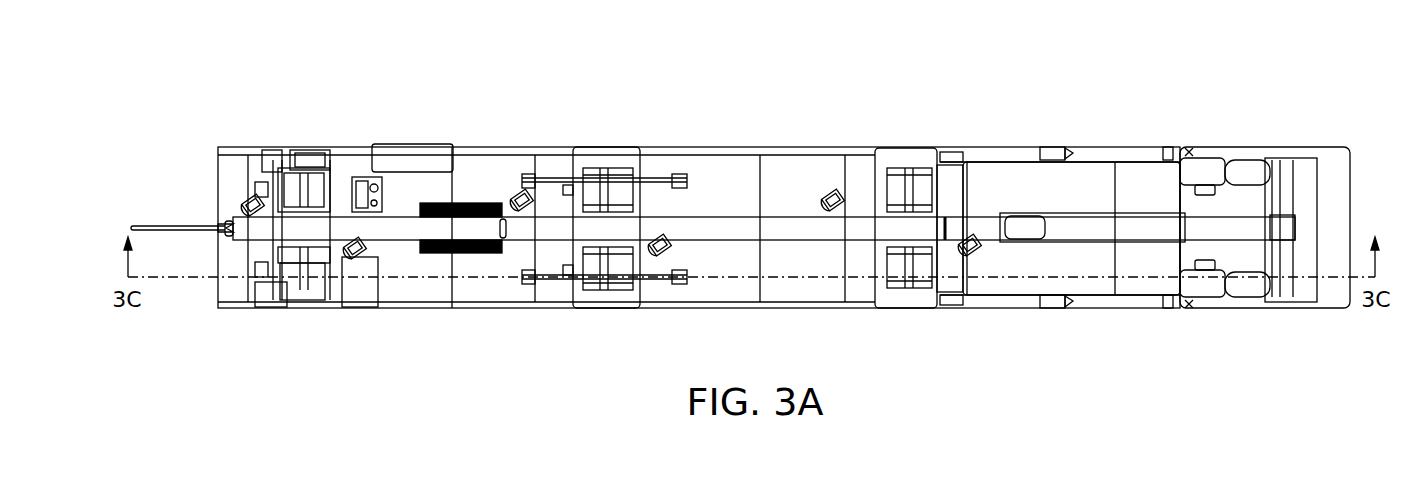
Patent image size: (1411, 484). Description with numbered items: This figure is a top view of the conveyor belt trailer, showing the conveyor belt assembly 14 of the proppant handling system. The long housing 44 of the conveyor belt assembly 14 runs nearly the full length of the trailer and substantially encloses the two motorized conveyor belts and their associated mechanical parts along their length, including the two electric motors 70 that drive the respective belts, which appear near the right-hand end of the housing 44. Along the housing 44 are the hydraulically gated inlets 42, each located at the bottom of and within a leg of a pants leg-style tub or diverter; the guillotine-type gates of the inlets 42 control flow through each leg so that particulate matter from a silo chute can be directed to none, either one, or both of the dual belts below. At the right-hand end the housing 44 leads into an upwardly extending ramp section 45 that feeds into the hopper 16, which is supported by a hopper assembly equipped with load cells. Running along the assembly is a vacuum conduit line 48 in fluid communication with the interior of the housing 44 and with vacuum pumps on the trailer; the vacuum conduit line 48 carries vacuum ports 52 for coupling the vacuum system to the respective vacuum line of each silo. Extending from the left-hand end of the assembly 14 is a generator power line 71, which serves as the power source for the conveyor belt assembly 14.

The conveyor belt assembly 14 is at (747, 92).
The hopper 16 is at (1338, 153).
The housing inlet 42 is at (283, 187).
The housing 44 is at (1007, 285).
The ramp section 45 is at (1087, 185).
The vacuum conduit line 48 is at (990, 222).
The vacuum port 52 is at (522, 198).
The electric motor 70 is at (1207, 167).
The generator power line 71 is at (172, 225).